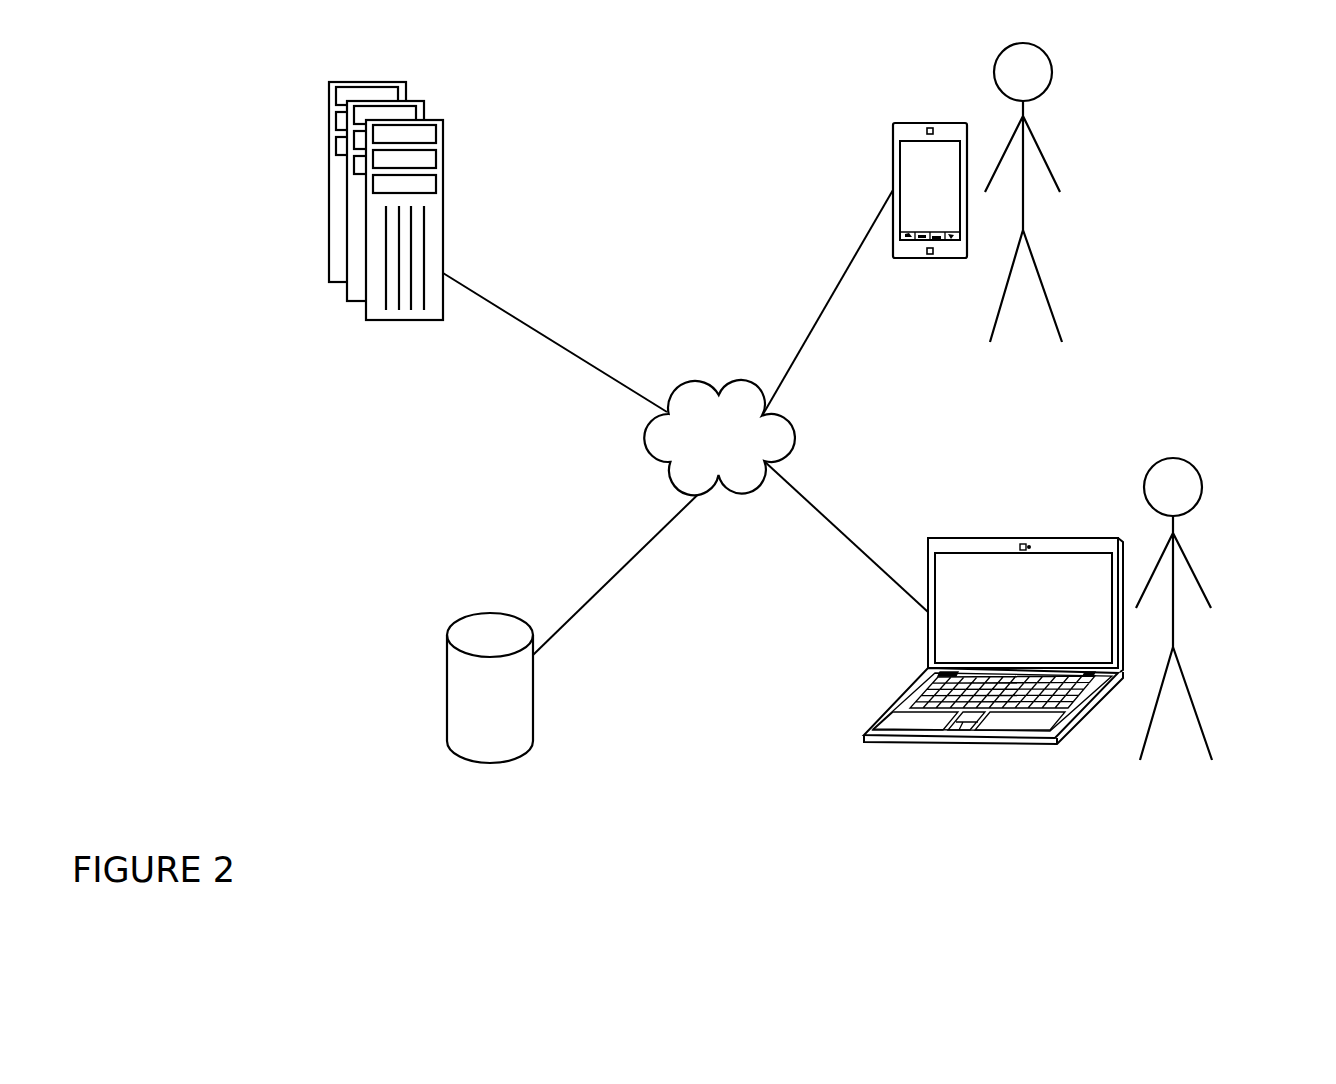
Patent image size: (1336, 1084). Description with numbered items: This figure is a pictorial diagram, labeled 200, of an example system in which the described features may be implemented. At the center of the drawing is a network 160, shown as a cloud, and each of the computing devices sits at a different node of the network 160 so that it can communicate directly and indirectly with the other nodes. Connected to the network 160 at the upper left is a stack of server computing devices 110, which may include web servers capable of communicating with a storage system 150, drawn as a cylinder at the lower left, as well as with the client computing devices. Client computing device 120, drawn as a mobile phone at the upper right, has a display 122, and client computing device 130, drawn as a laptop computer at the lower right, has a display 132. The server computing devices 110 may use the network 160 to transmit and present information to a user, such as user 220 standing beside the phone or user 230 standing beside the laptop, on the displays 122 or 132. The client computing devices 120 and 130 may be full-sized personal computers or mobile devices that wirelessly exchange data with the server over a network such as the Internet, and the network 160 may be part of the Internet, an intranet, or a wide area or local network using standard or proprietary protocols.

The system 200 is at (158, 815).
The server computing device 110 is at (443, 163).
The client computing device 120 is at (871, 190).
The display 122 is at (900, 185).
The client computing device 130 is at (966, 641).
The display 132 is at (935, 650).
The storage system 150 is at (535, 708).
The network 160 is at (719, 437).
The user 220 is at (1055, 181).
The user 230 is at (1205, 598).